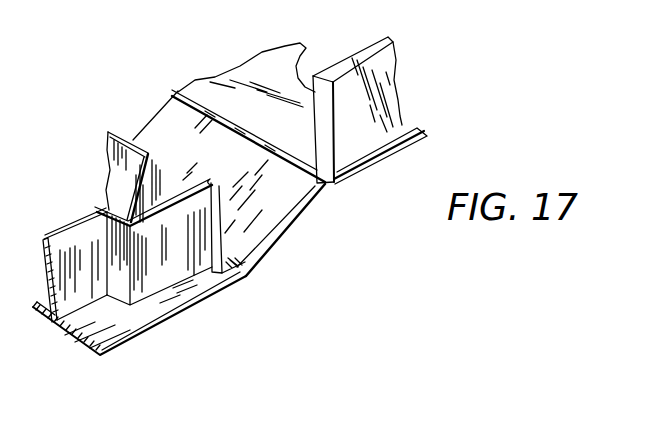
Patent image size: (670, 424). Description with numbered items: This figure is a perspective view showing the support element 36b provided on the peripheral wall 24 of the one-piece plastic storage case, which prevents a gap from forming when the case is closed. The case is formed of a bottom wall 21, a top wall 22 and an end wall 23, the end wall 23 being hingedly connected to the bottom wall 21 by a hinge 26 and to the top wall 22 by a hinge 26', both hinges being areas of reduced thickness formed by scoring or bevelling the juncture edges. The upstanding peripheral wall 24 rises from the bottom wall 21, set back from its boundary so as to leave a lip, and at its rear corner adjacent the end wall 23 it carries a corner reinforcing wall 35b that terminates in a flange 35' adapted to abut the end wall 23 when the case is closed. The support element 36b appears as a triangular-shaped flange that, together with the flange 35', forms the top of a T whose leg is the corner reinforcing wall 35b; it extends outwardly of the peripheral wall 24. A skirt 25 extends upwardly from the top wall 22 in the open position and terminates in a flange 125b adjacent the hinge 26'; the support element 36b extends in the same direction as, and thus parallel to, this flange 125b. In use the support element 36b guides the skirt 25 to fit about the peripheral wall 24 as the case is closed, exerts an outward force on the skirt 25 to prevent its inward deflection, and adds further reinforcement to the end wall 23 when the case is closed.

The bottom wall 21 is at (108, 332).
The top wall 22 is at (243, 75).
The end wall 23 is at (275, 213).
The peripheral wall 24 is at (87, 238).
The skirt 25 is at (378, 82).
The hinge 26 is at (273, 236).
The hinge 26' is at (228, 112).
The flange 35' is at (153, 177).
The corner reinforcing wall 35b is at (165, 280).
The support element 36b is at (218, 273).
The flange 125b is at (307, 53).